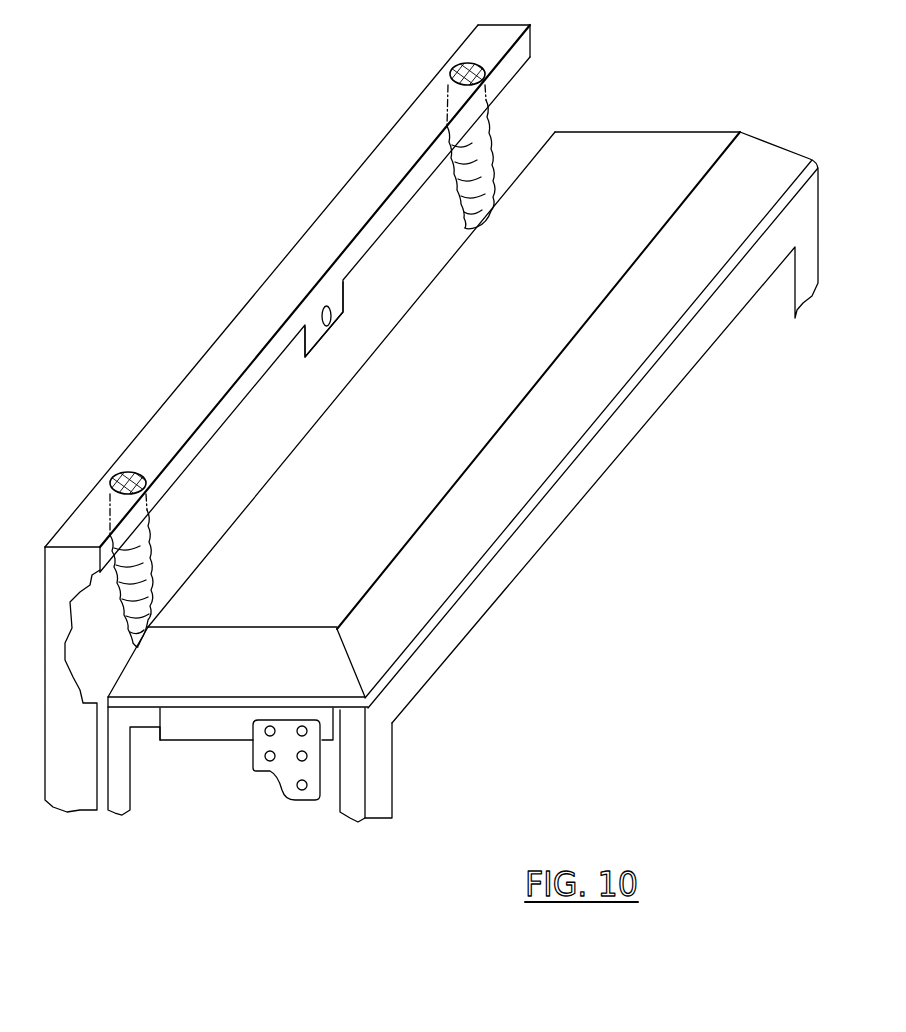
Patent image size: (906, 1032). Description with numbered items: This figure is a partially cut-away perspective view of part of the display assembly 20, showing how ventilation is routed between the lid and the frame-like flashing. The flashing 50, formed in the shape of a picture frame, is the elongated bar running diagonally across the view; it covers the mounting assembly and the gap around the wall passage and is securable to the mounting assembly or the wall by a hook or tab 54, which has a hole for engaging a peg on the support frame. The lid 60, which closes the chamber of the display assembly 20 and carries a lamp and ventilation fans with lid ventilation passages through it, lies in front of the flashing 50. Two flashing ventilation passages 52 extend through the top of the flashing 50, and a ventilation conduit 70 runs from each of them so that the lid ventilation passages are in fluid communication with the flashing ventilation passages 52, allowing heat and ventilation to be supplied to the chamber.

The display assembly 20 is at (288, 160).
The flashing 50 is at (200, 378).
The flashing ventilation passages 52 is at (455, 64).
The tab 54 is at (320, 335).
The lid 60 is at (617, 143).
The ventilation conduit 70 is at (452, 197).